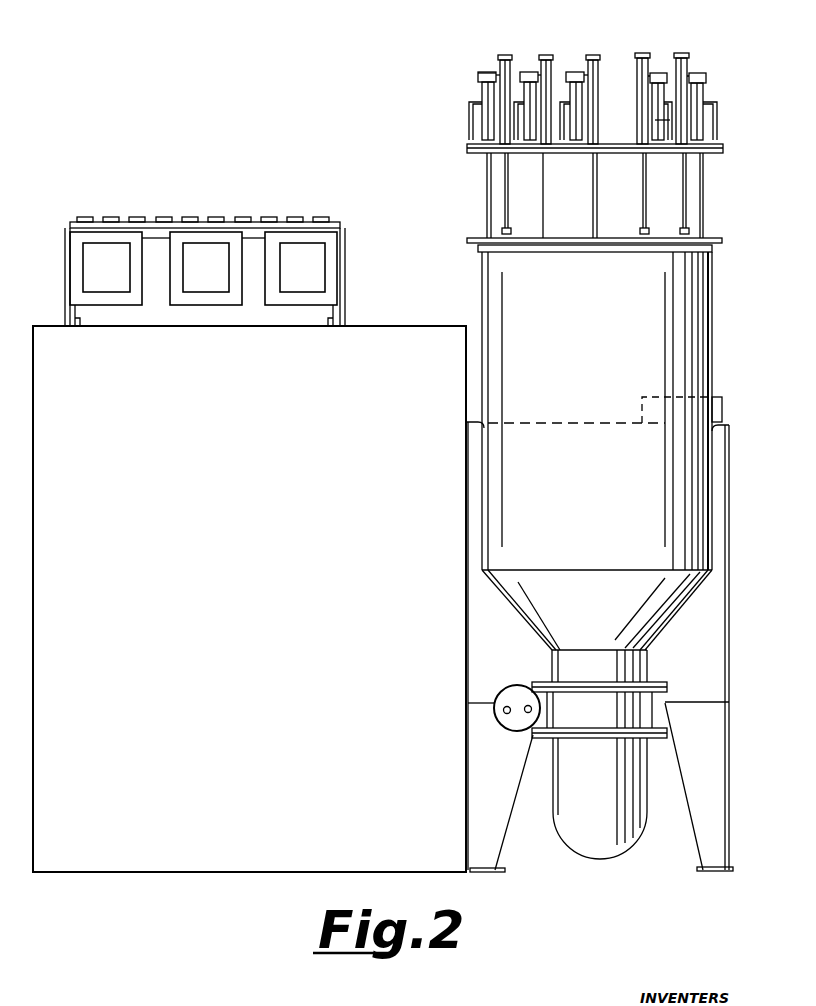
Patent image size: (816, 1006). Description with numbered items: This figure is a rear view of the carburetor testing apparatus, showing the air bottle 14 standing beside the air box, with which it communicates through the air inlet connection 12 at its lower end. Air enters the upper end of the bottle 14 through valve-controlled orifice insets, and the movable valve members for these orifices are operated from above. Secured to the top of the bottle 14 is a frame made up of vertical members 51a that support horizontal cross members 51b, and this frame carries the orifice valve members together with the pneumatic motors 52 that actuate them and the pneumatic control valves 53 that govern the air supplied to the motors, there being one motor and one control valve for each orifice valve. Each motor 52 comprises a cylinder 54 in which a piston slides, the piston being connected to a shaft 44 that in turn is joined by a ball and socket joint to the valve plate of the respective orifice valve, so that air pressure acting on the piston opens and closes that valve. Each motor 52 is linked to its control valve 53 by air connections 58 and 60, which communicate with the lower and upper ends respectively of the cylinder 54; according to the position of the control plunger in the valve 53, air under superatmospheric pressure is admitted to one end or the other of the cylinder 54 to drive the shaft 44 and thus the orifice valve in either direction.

The air inlet connection 12 is at (617, 842).
The air bottle 14 is at (690, 338).
The shaft 44 is at (685, 230).
The vertical members 51a is at (487, 187).
The horizontal cross members 51b is at (537, 153).
The pneumatic motors 52 is at (548, 57).
The pneumatic control valves 53 is at (538, 87).
The cylinder 54 is at (640, 128).
The air connection 58 is at (688, 133).
The air connection 60 is at (490, 57).